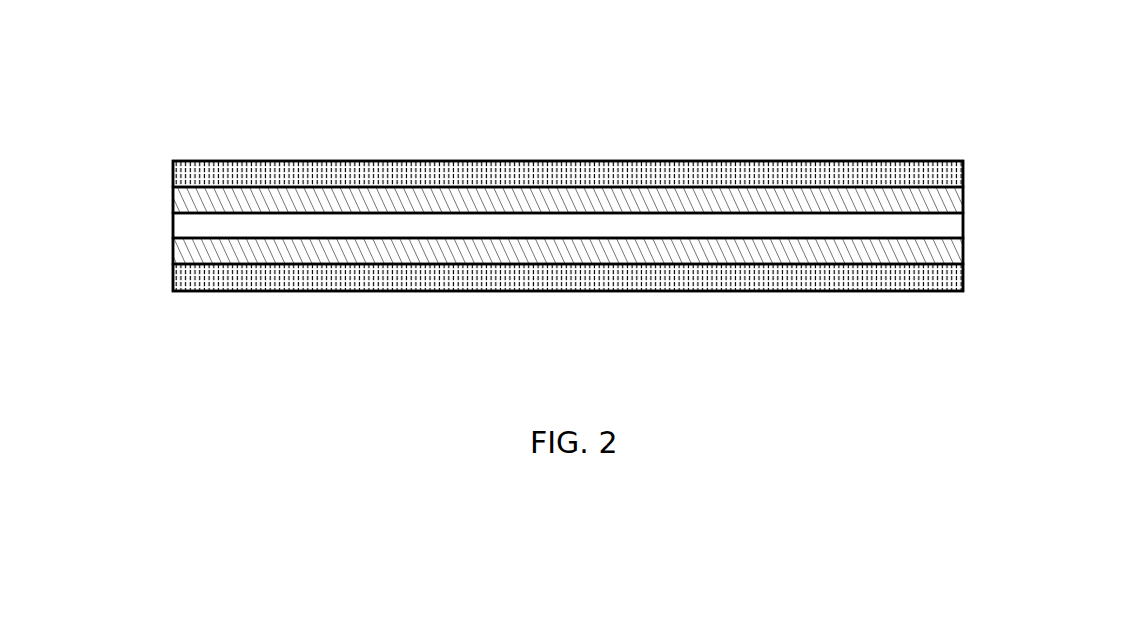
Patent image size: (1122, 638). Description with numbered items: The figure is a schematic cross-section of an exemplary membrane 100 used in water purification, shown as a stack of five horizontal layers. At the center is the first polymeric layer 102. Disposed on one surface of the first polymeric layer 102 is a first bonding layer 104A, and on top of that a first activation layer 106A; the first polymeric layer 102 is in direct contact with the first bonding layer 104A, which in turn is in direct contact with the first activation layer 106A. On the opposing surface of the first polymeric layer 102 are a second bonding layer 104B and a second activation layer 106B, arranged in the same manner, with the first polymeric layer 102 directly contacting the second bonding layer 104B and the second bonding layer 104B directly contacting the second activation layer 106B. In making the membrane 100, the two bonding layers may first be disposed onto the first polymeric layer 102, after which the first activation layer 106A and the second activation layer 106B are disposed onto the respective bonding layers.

The membrane 100 is at (1009, 106).
The first polymeric layer 102 is at (963, 228).
The first bonding layer 104A is at (175, 203).
The second bonding layer 104B is at (175, 251).
The first activation layer 106A is at (965, 169).
The second activation layer 106B is at (963, 278).